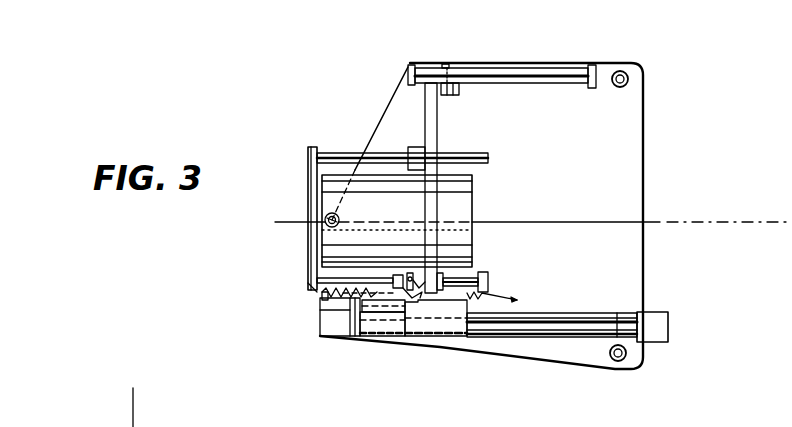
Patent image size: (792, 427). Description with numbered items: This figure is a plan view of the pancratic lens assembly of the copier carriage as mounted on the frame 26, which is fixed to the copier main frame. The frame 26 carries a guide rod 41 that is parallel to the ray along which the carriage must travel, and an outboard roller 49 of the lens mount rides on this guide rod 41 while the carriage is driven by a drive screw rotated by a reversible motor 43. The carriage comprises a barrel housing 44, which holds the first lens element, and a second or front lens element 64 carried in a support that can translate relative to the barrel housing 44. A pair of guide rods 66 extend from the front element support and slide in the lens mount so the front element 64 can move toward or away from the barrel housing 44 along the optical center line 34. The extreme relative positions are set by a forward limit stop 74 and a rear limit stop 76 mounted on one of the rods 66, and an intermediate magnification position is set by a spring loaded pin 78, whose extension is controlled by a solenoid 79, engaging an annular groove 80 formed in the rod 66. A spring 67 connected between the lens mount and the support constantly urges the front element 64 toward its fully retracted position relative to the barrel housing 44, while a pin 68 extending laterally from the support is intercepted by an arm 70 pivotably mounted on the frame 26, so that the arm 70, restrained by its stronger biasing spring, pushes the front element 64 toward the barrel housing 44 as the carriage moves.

The frame 26 is at (643, 148).
The optical center line 34 is at (650, 223).
The guide rod 41 is at (532, 85).
The reversible motor 43 is at (662, 322).
The barrel housing 44 is at (465, 200).
The outboard roller 49 is at (447, 72).
The second lens element 64 is at (313, 148).
The guide rods 66 is at (463, 153).
The spring 67 is at (308, 292).
The pin 68 is at (318, 295).
The arm 70 is at (378, 293).
The forward limit stop 74 is at (362, 302).
The rear limit stop 76 is at (504, 304).
The spring loaded pin 78 is at (400, 278).
The solenoid 79 is at (365, 290).
The groove 80 is at (448, 272).